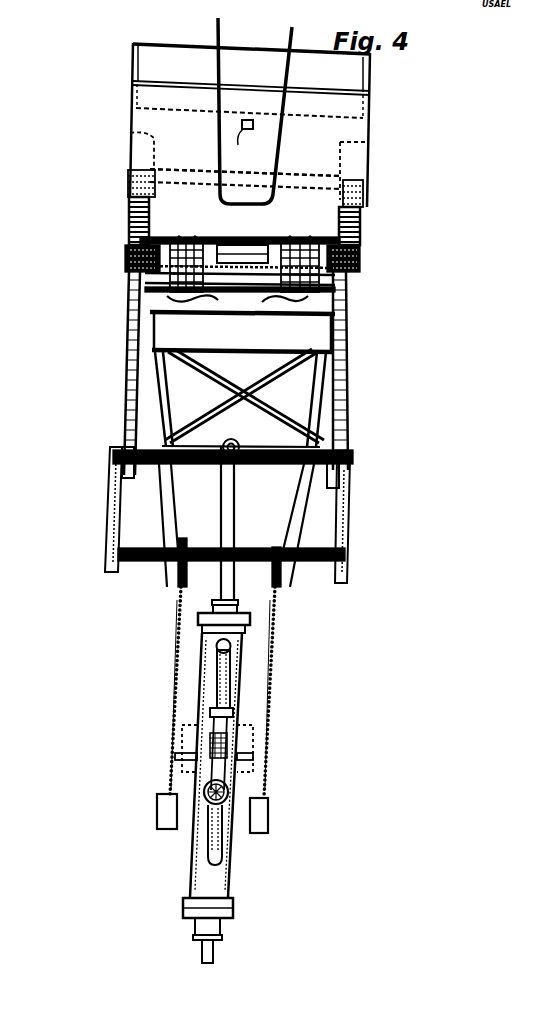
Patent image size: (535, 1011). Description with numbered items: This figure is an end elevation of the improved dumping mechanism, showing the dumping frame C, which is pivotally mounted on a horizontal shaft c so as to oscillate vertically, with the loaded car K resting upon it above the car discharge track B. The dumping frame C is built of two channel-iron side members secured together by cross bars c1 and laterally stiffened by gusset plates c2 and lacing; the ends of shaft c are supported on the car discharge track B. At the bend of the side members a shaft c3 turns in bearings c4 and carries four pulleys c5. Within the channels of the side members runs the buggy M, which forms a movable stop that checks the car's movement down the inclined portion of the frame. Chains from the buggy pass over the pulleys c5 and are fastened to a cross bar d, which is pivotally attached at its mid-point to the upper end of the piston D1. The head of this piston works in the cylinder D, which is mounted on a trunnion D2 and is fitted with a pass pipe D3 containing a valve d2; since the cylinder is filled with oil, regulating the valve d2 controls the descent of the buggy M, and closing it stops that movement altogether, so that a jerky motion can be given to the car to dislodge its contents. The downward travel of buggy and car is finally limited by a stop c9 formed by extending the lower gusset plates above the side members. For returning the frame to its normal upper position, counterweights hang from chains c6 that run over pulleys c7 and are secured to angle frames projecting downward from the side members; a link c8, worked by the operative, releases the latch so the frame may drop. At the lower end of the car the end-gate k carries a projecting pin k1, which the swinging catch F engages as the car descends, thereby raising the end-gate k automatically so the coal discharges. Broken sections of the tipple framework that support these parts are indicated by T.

The car K is at (247, 157).
The pin k1 is at (245, 140).
The swinging catch F is at (264, 111).
The end-gate k is at (245, 201).
The cross bars c1 is at (240, 273).
The gusset plates c2 is at (288, 275).
The buggy M is at (242, 332).
The dumping frame C is at (129, 386).
The pulleys c5 is at (210, 412).
The link c8 is at (262, 402).
The cross bar d is at (220, 446).
The horizontal shaft c is at (259, 455).
The stop c9 is at (118, 450).
The car discharge track B is at (352, 482).
The shaft c3 is at (173, 511).
The piston D1 is at (221, 516).
The pulleys c7 is at (187, 552).
The chains c6 is at (177, 624).
The bearings c4 is at (157, 808).
The cylinder D is at (229, 868).
The pass pipe D3 is at (223, 681).
The trunnion D2 is at (182, 742).
The supporting structure T is at (246, 749).
The valve d2 is at (228, 790).